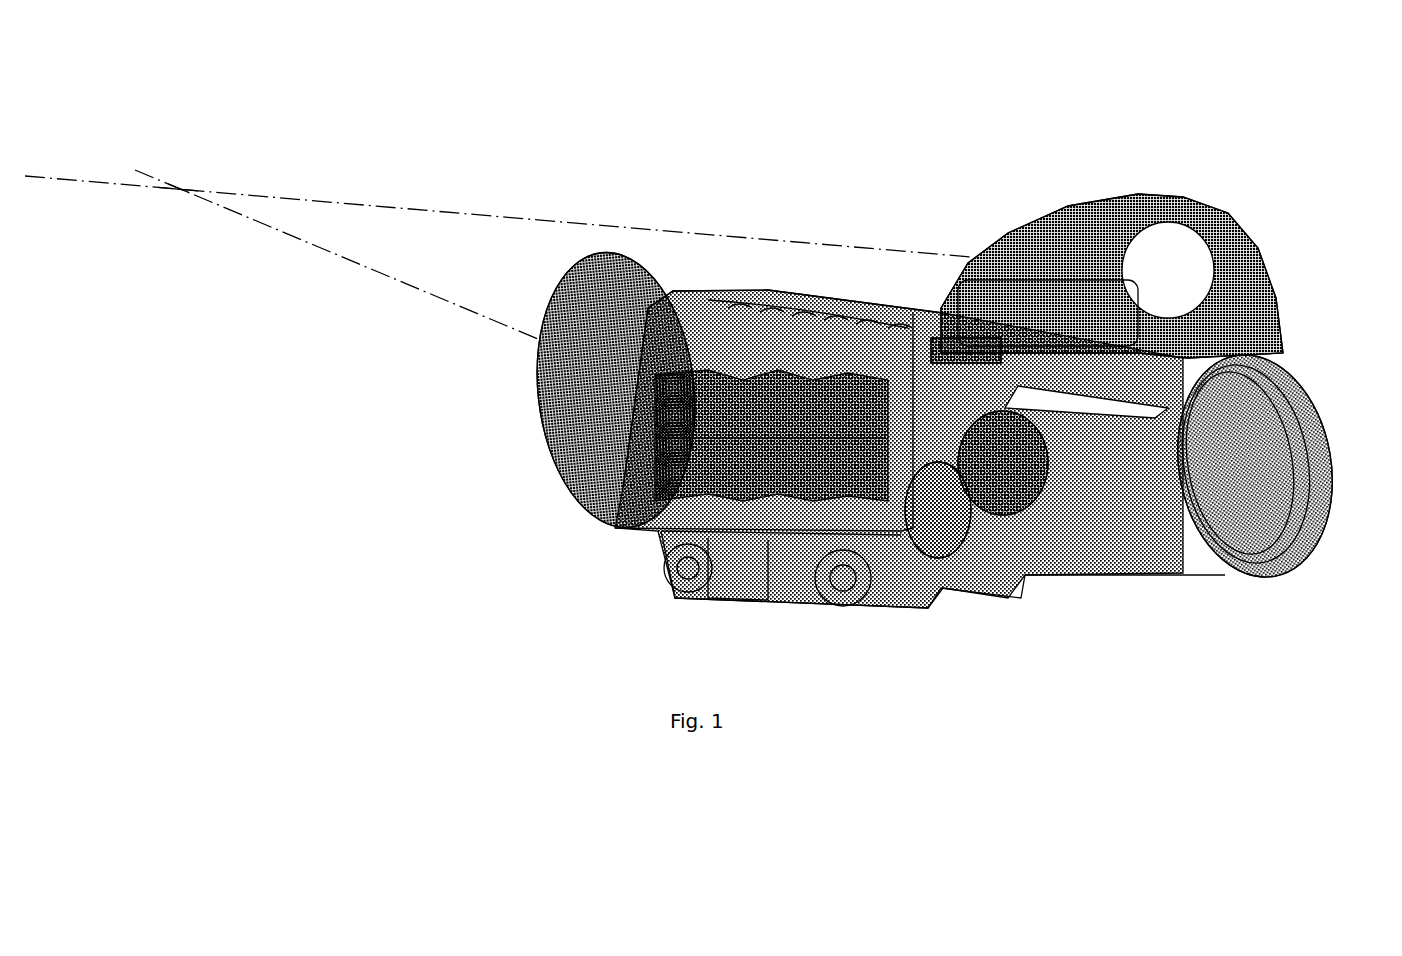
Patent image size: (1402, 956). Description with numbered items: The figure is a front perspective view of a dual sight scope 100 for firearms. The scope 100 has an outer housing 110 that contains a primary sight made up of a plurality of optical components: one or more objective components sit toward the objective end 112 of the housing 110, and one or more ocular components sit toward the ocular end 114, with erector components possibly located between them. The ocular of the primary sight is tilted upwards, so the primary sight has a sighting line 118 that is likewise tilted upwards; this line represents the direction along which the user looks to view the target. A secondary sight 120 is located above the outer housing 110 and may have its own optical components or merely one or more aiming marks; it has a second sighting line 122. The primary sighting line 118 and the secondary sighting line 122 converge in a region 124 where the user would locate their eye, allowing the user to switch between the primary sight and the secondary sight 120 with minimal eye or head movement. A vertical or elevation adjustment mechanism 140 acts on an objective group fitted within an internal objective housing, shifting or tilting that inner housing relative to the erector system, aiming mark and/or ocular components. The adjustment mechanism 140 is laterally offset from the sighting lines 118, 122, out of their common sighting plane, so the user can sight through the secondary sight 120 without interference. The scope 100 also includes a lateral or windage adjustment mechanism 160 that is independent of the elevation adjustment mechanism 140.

The scope 100 is at (1210, 121).
The outer housing 110 is at (770, 293).
The objective end 112 is at (1287, 518).
The ocular end 114 is at (567, 465).
The sighting line 118 is at (383, 268).
The secondary sight 120 is at (1075, 220).
The second sighting line 122 is at (512, 207).
The region 124 is at (180, 185).
The elevation adjustment mechanism 140 is at (913, 367).
The windage adjustment mechanism 160 is at (982, 470).